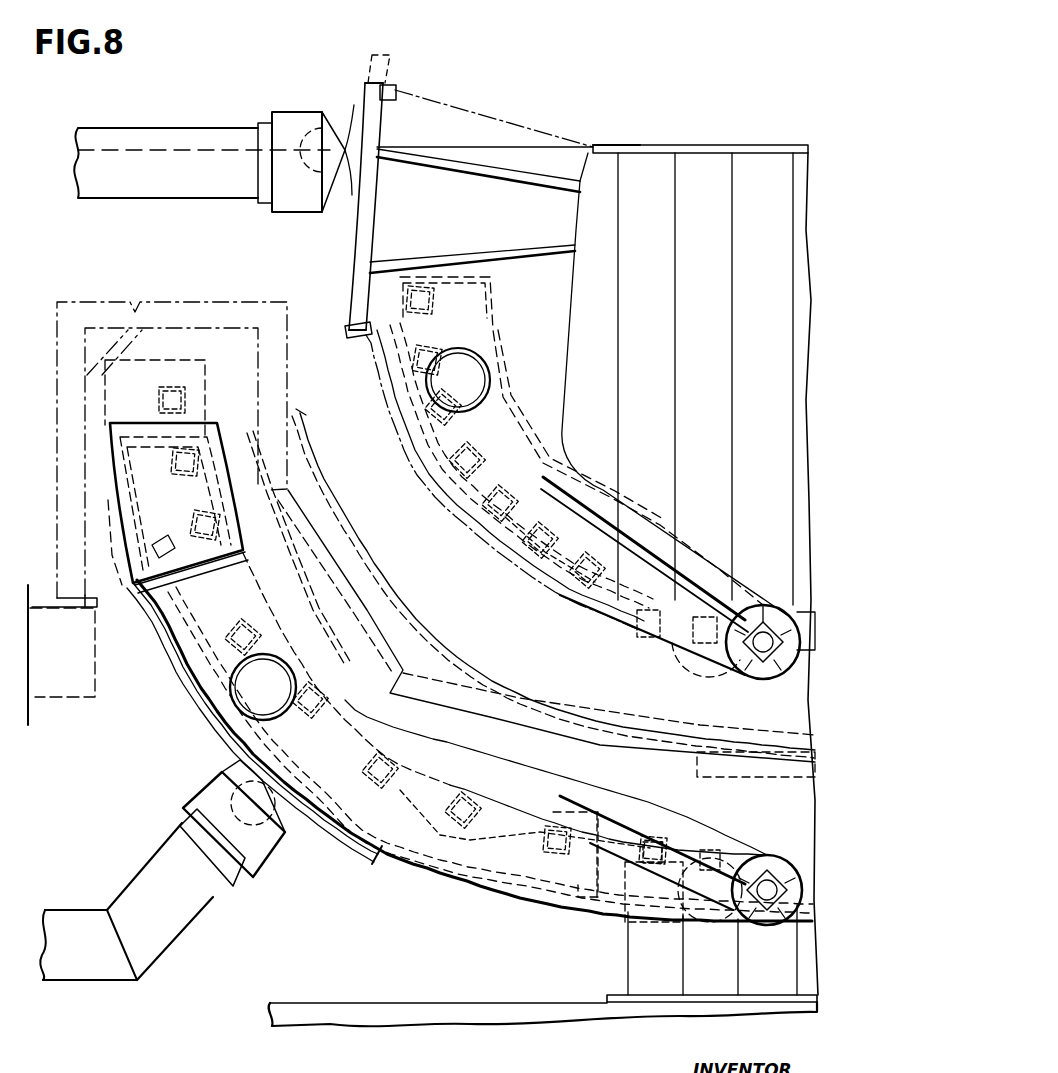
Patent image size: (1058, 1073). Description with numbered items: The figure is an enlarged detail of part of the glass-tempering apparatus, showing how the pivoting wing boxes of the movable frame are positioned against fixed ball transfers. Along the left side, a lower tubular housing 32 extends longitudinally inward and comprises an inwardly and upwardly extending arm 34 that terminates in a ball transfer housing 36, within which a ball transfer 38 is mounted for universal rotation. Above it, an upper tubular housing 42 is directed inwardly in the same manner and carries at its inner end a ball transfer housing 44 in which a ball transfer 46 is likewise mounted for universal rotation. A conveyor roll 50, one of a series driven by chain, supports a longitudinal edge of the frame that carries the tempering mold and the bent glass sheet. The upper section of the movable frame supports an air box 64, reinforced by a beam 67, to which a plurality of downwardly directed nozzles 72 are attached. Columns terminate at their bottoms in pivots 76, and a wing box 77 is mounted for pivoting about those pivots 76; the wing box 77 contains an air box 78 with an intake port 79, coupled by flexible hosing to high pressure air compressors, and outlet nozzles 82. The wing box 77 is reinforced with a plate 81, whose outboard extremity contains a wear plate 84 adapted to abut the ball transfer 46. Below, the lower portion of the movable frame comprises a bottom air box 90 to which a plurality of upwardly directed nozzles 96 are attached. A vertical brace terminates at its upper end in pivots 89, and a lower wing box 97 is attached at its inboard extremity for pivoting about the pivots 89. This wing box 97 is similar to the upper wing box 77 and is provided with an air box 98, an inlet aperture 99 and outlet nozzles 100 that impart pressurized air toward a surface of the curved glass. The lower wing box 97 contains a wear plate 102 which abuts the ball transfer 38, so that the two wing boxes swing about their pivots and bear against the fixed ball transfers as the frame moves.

The lower tubular housing 32 is at (47, 910).
The inwardly and upwardly extending arm 34 is at (138, 877).
The ball transfer housing 36 is at (204, 800).
The ball transfer 38 is at (240, 773).
The upper tubular housing 42 is at (83, 128).
The ball transfer housing 44 is at (298, 112).
The ball transfer 46 is at (350, 140).
The conveyor roll 50 is at (75, 697).
The air box 64 is at (684, 140).
The beam 67 is at (640, 147).
The downwardly directed nozzle 72 is at (690, 658).
The pivot 76 is at (770, 628).
The wing box 77 is at (500, 314).
The air box 78 is at (460, 444).
The intake port 79 is at (482, 363).
The reinforcement plate 81 is at (571, 277).
The outlet nozzle 82 is at (482, 514).
The wear plate 84 is at (349, 236).
The pivot 89 is at (775, 910).
The bottom air box 90 is at (486, 994).
The upwardly directed nozzle 96 is at (702, 860).
The wing box 97 is at (410, 862).
The air box 98 is at (474, 832).
The inlet aperture 99 is at (232, 670).
The outlet nozzle 100 is at (305, 685).
The wear plate 102 is at (208, 720).